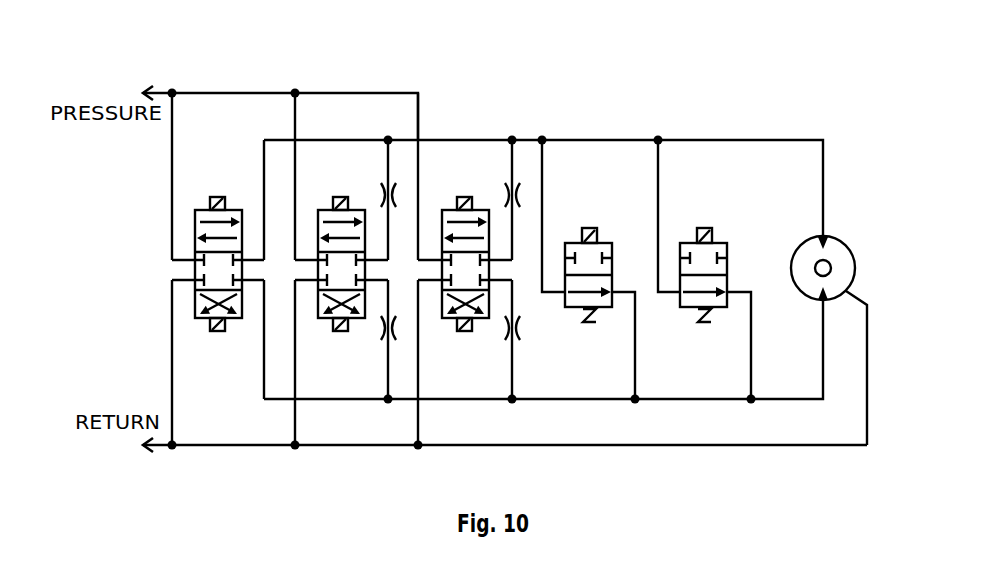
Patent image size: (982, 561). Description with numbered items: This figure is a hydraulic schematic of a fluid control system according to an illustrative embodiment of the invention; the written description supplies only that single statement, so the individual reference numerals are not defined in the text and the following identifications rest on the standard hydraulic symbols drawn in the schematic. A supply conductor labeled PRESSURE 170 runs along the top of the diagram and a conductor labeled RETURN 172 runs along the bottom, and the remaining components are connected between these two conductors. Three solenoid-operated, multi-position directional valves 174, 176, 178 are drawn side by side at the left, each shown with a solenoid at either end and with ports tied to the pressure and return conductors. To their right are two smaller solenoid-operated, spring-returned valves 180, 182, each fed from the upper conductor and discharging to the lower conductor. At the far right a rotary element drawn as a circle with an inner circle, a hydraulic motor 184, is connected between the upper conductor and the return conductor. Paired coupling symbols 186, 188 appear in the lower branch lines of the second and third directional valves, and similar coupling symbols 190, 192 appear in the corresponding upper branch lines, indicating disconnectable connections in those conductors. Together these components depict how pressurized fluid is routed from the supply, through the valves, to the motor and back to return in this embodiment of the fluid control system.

The pressure line 170 is at (158, 90).
The return line 172 is at (158, 450).
The three-position directional control valve 174 is at (240, 209).
The three-position directional control valve 176 is at (360, 209).
The three-position directional control valve 178 is at (483, 209).
The two-position solenoid valve 180 is at (605, 242).
The two-position solenoid valve 182 is at (718, 242).
The hydraulic motor 184 is at (808, 243).
The quick disconnect coupling 186 is at (381, 330).
The quick disconnect coupling 188 is at (506, 330).
The quick disconnect coupling 190 is at (382, 193).
The quick disconnect coupling 192 is at (506, 193).